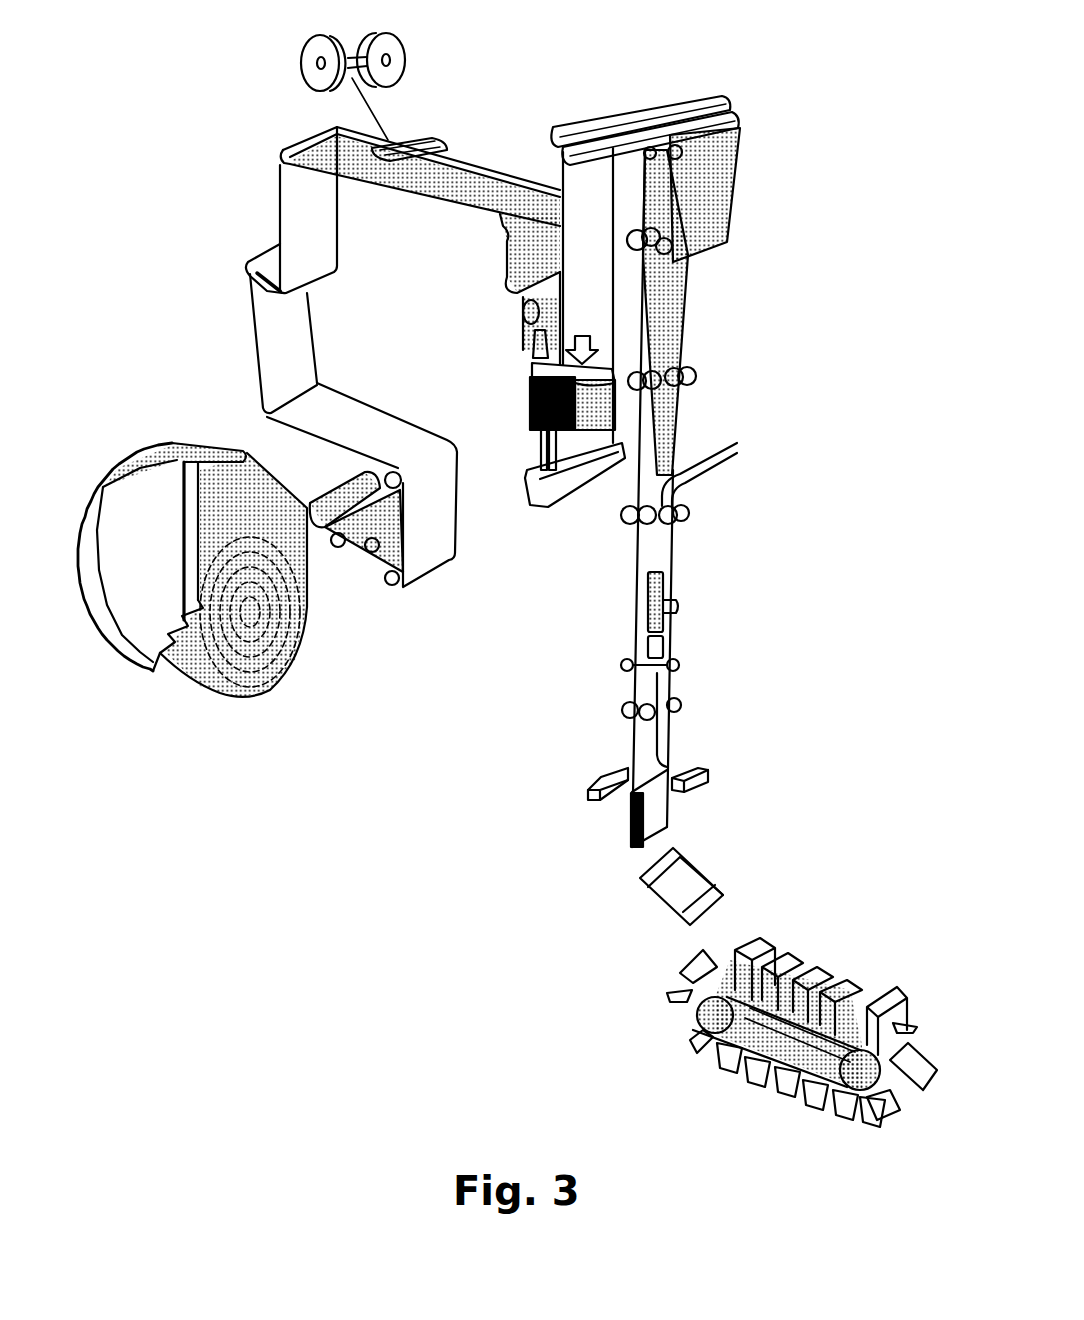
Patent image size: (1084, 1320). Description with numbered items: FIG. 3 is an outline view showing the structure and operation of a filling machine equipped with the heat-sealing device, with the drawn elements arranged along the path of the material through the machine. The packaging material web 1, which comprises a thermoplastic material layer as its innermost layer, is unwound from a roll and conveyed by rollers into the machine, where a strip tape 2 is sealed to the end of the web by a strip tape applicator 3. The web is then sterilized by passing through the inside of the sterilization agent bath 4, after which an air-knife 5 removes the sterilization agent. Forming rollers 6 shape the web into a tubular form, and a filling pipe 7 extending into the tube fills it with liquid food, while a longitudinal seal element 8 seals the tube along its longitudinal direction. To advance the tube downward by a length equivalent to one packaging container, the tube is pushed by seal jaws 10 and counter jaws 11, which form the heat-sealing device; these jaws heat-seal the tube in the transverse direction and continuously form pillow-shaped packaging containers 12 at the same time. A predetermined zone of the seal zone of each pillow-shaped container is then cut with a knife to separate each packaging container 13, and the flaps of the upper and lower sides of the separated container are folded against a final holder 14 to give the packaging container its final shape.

The packaging material web 1 is at (240, 647).
The strip tape 2 is at (392, 63).
The strip tape applicator 3 is at (403, 147).
The sterilization agent bath 4 is at (550, 510).
The air-knife 5 is at (653, 118).
The forming rollers 6 is at (690, 370).
The filling pipe 7 is at (718, 445).
The longitudinal seal element 8 is at (667, 587).
The seal jaws 10 is at (713, 773).
The counter jaws 11 is at (597, 778).
The pillow-shaped packaging containers 12 is at (627, 817).
The packaging container 13 is at (660, 895).
The final holder 14 is at (690, 993).